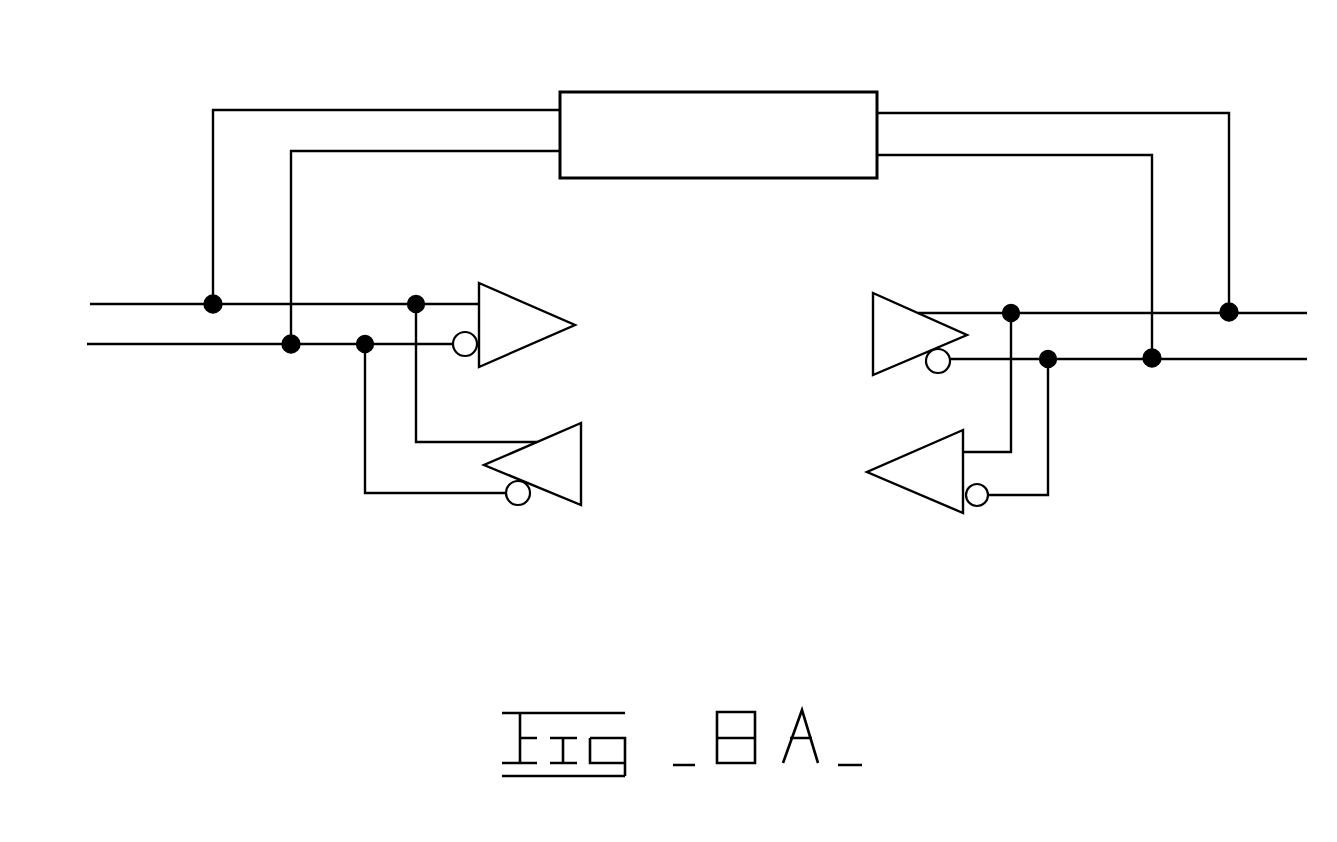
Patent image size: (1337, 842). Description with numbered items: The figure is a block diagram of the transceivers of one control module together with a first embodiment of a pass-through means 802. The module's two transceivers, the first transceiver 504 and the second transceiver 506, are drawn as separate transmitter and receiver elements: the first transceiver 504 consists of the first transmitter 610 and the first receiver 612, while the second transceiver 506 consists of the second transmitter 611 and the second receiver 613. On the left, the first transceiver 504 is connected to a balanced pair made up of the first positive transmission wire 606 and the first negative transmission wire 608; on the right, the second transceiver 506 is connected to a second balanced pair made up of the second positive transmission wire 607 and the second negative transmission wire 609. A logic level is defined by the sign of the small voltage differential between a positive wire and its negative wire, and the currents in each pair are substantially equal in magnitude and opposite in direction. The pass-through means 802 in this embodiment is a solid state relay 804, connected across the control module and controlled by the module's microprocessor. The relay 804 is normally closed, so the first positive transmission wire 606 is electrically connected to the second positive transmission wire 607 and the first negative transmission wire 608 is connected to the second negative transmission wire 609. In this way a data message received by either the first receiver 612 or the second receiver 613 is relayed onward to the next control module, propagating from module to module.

The pass-through means 802 is at (425, 62).
The solid state relay 804 is at (712, 178).
The first positive transmission wire 606 is at (160, 302).
The first negative transmission wire 608 is at (165, 346).
The second positive transmission wire 607 is at (1259, 311).
The second negative transmission wire 609 is at (1253, 361).
The first transmitter 610 is at (562, 503).
The first receiver 612 is at (535, 343).
The second transmitter 611 is at (895, 297).
The second receiver 613 is at (917, 445).
The first transceiver 504 is at (491, 523).
The second transceiver 506 is at (940, 479).